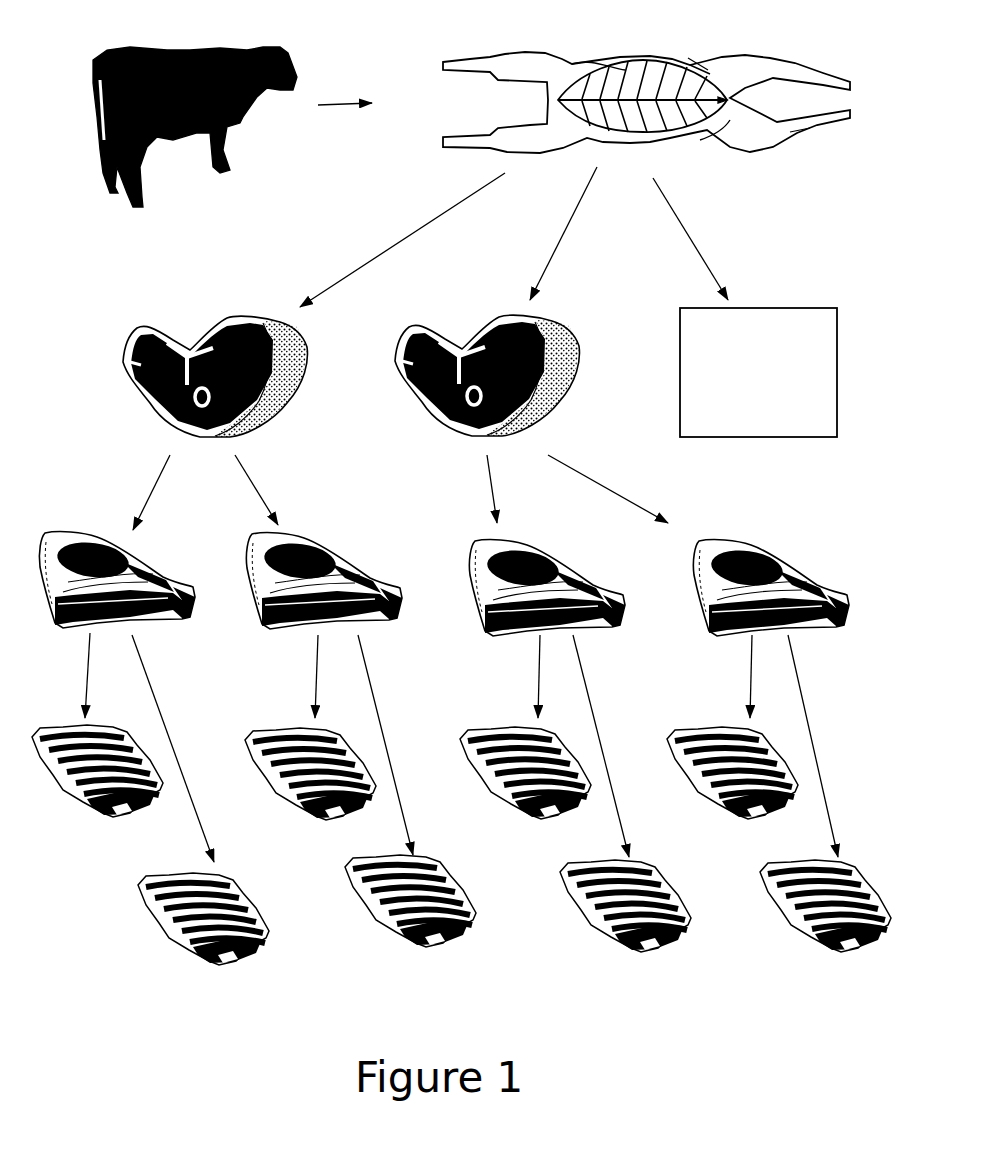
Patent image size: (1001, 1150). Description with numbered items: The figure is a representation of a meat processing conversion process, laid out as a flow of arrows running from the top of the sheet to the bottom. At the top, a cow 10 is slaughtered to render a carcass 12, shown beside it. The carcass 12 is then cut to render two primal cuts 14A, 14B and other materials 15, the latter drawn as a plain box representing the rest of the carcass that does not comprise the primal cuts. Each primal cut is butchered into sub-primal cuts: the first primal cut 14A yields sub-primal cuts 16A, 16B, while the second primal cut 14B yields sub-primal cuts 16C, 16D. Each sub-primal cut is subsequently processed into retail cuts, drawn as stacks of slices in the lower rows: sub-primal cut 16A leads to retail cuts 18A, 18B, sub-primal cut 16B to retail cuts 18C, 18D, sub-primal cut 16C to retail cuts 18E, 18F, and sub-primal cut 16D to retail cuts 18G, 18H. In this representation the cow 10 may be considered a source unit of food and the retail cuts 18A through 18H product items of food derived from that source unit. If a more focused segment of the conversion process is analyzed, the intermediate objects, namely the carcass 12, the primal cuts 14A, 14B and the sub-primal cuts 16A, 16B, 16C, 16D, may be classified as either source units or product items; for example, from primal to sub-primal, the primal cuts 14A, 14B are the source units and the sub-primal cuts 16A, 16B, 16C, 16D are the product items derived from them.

The cow 10 is at (178, 51).
The carcass 12 is at (709, 56).
The primal cut 14A is at (144, 398).
The primal cut 14B is at (431, 405).
The other materials 15 is at (758, 372).
The sub-primal cut 16A is at (78, 538).
The sub-primal cut 16B is at (340, 516).
The sub-primal cut 16C is at (600, 544).
The sub-primal cut 16D is at (821, 543).
The retail cut 18A is at (140, 819).
The retail cut 18B is at (244, 962).
The retail cut 18C is at (282, 731).
The retail cut 18D is at (432, 946).
The retail cut 18E is at (503, 730).
The retail cut 18F is at (664, 947).
The retail cut 18G is at (725, 733).
The retail cut 18H is at (868, 945).